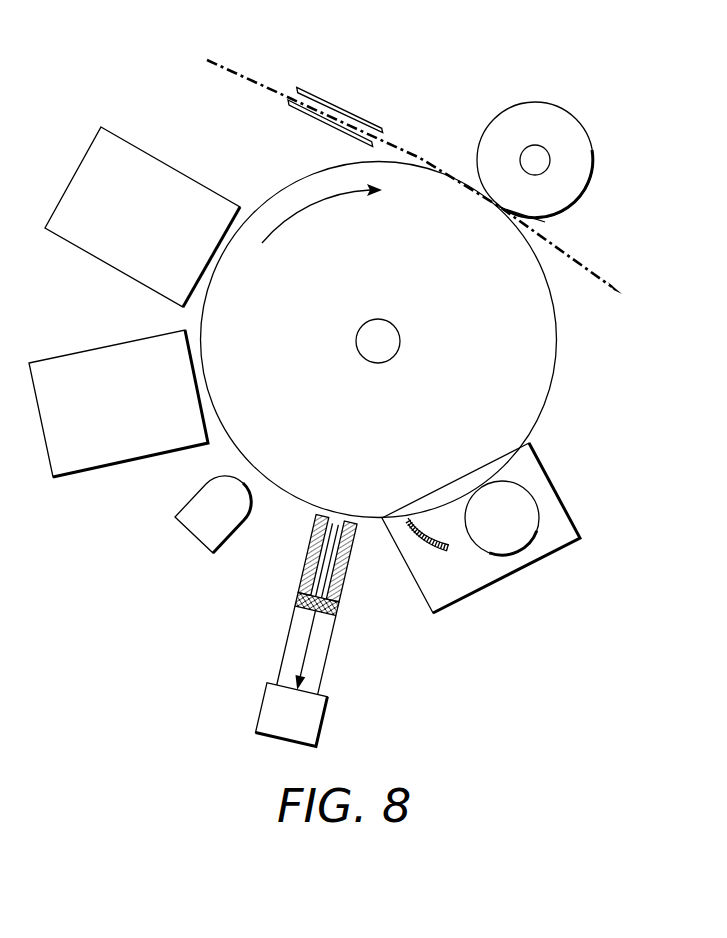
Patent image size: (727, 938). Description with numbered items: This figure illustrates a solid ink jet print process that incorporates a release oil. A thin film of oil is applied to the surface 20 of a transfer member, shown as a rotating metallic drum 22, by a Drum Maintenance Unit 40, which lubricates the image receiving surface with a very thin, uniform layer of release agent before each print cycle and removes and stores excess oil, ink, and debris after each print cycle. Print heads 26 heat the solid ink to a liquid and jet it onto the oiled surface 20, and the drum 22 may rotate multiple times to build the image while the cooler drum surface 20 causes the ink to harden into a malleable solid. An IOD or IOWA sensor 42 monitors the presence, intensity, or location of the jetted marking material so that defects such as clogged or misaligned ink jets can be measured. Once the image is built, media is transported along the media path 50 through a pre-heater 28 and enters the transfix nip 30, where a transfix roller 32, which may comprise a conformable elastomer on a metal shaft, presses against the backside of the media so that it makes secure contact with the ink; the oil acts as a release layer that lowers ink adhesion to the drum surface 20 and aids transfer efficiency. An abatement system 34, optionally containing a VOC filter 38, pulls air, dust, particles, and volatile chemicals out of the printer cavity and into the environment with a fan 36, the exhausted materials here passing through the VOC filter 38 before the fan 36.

The surface 20 is at (552, 382).
The rotating metallic drum 22 is at (389, 454).
The print heads 26 is at (115, 347).
The pre-heater 28 is at (350, 92).
The transfix nip 30 is at (505, 210).
The transfix roller 32 is at (558, 104).
The abatement system 34 is at (290, 631).
The fan 36 is at (263, 708).
The VOC filter 38 is at (297, 600).
The Drum Maintenance Unit 40 is at (511, 580).
The IOD or IOWA sensor 42 is at (195, 537).
The media path 50 is at (245, 63).